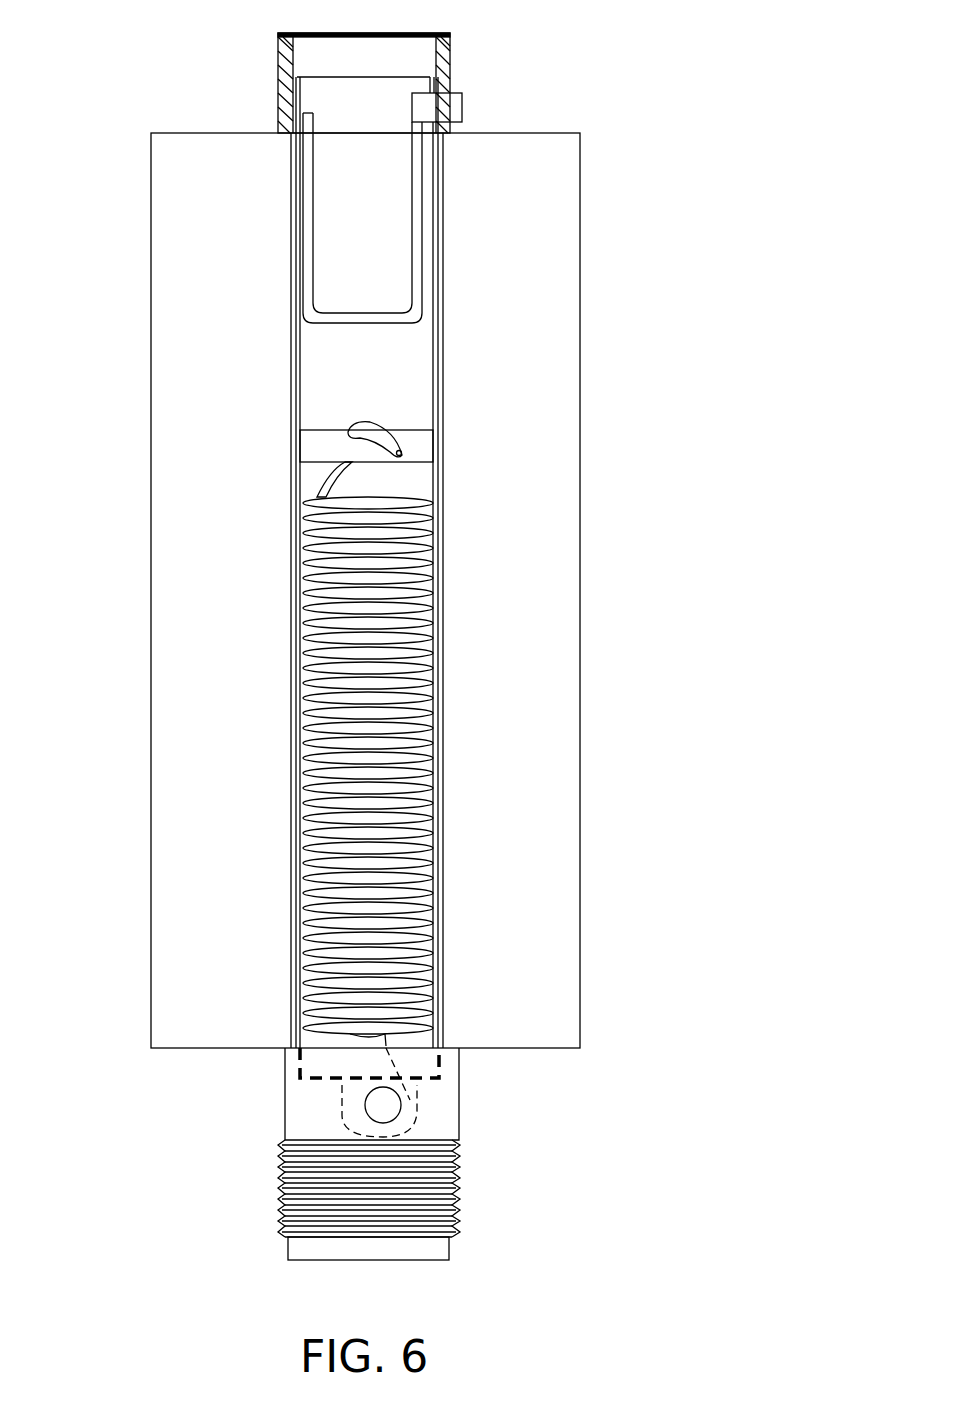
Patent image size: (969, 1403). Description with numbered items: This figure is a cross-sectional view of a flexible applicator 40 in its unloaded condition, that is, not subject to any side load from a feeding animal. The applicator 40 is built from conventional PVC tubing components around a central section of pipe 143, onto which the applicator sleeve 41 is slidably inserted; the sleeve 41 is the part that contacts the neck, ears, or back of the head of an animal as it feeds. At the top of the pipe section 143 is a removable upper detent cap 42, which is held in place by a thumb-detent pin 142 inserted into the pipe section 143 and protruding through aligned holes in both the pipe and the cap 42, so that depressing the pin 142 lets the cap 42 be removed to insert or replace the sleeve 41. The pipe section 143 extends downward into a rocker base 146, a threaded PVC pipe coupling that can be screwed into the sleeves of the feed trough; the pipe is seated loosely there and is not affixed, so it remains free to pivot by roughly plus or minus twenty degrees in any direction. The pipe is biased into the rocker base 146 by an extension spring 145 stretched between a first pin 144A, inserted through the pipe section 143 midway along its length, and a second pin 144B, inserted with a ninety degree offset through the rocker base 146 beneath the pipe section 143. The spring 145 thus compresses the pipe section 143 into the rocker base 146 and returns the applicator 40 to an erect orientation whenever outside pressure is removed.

The flexible applicator 40 is at (442, 364).
The applicator sleeve 41 is at (582, 386).
The upper detent cap 42 is at (450, 63).
The thumb-detent pin 142 is at (462, 107).
The pipe section 143 is at (290, 358).
The first pin 144A is at (310, 443).
The second pin 144B is at (383, 1105).
The extension spring 145 is at (315, 485).
The rocker base 146 is at (460, 1187).